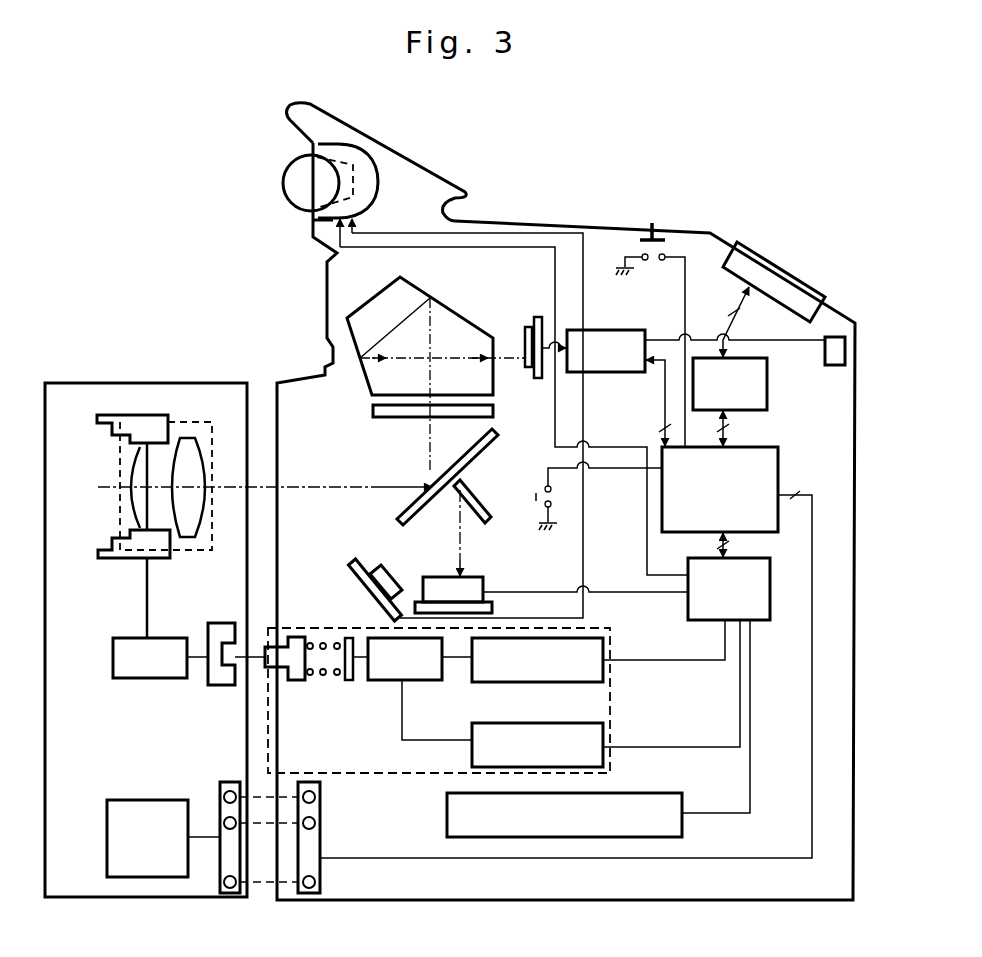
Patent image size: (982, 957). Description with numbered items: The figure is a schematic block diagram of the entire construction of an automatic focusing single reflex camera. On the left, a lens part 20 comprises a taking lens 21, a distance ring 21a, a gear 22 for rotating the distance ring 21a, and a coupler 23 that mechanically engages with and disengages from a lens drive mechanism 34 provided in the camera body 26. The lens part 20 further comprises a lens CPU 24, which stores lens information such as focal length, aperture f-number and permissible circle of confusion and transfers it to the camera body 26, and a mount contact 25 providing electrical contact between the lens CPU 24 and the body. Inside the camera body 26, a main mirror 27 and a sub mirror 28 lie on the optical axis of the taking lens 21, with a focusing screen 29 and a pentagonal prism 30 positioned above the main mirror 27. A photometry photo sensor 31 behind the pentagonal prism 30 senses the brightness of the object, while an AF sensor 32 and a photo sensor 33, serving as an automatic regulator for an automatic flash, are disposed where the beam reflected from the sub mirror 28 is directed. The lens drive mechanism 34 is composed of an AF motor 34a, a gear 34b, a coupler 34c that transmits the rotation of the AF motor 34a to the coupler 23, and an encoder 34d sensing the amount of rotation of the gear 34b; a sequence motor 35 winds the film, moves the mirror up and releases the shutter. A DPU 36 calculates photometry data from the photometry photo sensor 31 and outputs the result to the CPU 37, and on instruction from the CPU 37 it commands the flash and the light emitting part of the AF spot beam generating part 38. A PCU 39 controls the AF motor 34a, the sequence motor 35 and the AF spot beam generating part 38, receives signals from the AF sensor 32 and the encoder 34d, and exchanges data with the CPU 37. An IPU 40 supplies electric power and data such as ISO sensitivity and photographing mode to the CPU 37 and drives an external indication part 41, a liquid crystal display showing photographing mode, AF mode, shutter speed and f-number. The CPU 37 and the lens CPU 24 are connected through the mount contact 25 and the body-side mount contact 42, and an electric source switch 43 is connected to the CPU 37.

The lens part 20 is at (180, 381).
The taking lens 21 is at (110, 465).
The distance ring 21a is at (118, 562).
The gear 22 is at (177, 638).
The coupler 23 is at (222, 687).
The lens CPU 24 is at (125, 800).
The mount contact 25 is at (227, 782).
The camera body 26 is at (857, 461).
The main mirror 27 is at (405, 508).
The sub mirror 28 is at (477, 490).
The focusing screen 29 is at (372, 408).
The pentagonal prism 30 is at (458, 312).
The photometry photo sensor 31 is at (532, 320).
The AF sensor 32 is at (478, 577).
The photo sensor 33 is at (390, 575).
The lens drive mechanism 34 is at (614, 678).
The AF motor 34a is at (507, 683).
The gear 34b is at (382, 682).
The coupler 34c is at (297, 681).
The encoder 34d is at (585, 723).
The sequence motor 35 is at (670, 793).
The DPU 36 is at (597, 330).
The CPU 37 is at (778, 467).
The AF spot beam generating part 38 is at (383, 164).
The PCU 39 is at (760, 620).
The IPU 40 is at (768, 392).
The external indication part 41 is at (797, 275).
The mount contact 42 is at (322, 838).
The electric source switch 43 is at (662, 236).